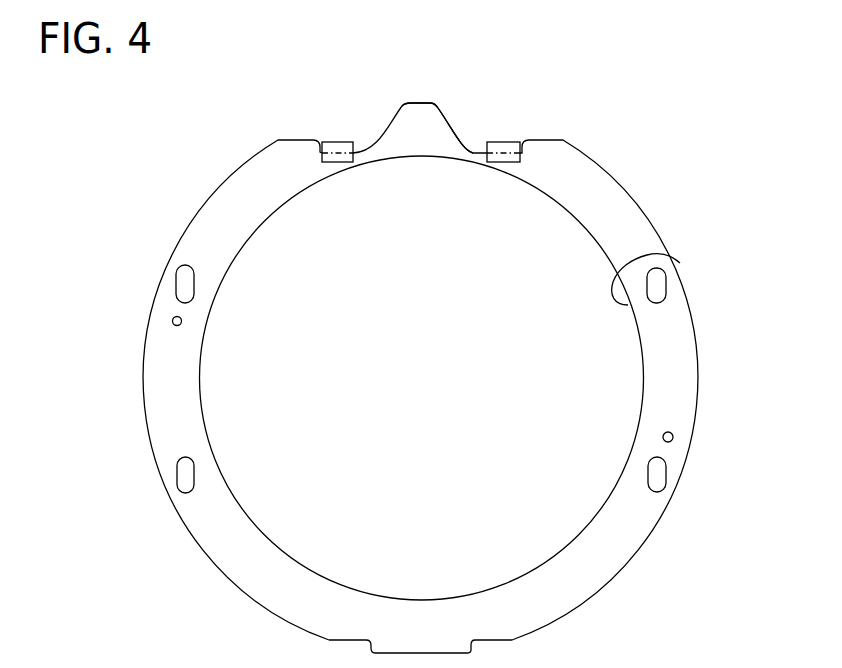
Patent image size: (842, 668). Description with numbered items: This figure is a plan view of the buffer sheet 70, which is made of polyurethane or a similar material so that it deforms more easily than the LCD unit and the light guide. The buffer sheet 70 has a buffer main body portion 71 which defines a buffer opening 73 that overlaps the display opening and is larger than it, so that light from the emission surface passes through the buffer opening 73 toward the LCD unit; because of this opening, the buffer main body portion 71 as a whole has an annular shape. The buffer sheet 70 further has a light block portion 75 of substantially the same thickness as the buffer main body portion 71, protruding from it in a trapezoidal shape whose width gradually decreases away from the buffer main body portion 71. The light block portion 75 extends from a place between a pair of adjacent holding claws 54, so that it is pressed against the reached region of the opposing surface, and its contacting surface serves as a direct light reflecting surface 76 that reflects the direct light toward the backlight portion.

The buffer sheet 70 is at (717, 97).
The buffer main body portion 71 is at (660, 237).
The buffer opening 73 is at (670, 263).
The light block portion 75 is at (422, 101).
The direct light reflecting surface 76 is at (438, 142).
The holding claws 54 is at (329, 141).